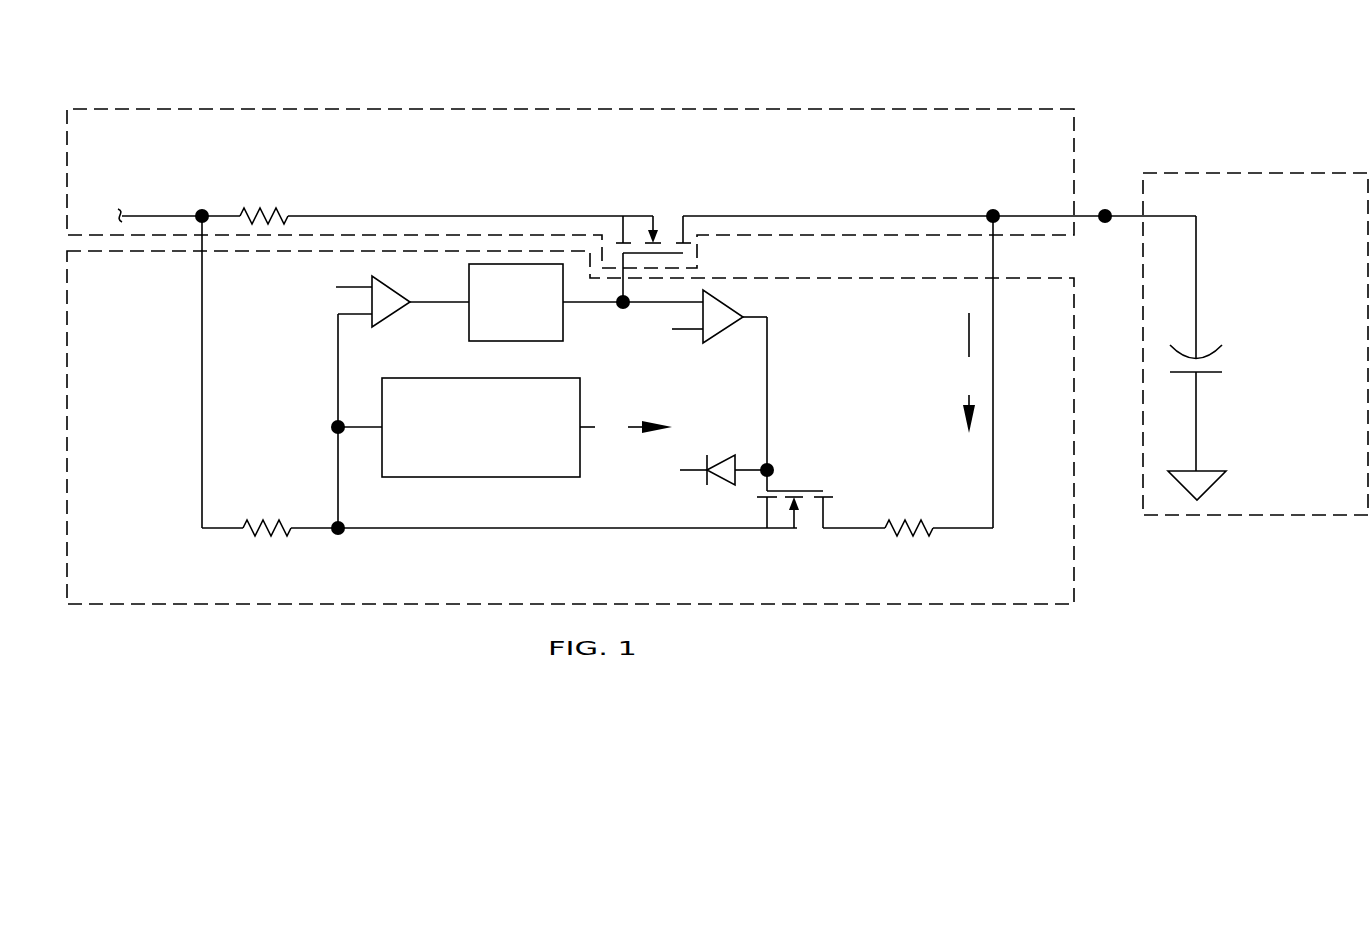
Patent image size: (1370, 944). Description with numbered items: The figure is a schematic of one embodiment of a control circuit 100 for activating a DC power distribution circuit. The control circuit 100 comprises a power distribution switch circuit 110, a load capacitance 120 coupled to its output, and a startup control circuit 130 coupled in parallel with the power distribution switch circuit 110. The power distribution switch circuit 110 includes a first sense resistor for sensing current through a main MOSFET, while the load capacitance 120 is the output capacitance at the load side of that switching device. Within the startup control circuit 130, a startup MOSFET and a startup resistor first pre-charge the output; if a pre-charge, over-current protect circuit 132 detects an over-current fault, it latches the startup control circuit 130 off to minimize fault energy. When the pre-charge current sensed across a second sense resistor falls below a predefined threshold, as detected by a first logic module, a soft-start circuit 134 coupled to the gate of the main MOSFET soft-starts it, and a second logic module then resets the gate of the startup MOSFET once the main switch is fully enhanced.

The control circuit 100 is at (180, 64).
The power distribution switch circuit 110 is at (993, 109).
The load capacitance 120 is at (1266, 173).
The startup control circuit 130 is at (1074, 573).
The pre-charge, over-current protect circuit 132 is at (582, 387).
The soft-start circuit 134 is at (465, 329).